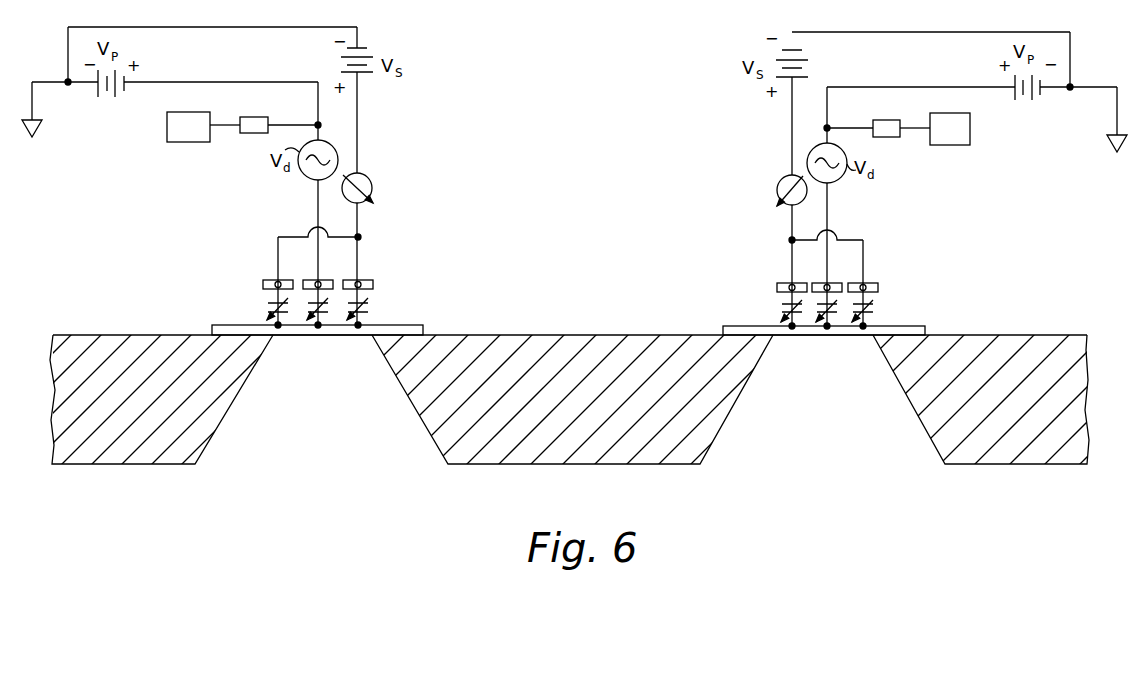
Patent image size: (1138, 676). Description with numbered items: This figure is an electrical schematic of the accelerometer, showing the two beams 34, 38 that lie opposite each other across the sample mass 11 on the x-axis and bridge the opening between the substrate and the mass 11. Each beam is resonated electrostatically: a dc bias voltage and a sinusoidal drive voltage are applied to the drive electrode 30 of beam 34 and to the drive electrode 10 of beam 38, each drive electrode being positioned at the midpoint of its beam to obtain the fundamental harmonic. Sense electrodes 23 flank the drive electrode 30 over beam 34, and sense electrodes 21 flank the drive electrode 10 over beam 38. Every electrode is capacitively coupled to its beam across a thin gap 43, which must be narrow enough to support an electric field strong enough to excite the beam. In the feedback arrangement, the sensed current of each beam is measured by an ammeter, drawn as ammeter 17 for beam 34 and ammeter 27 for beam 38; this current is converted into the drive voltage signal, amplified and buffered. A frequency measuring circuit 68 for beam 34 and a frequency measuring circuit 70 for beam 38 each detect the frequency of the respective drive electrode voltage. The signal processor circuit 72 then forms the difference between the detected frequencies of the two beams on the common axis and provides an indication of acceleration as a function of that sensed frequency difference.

The drive electrode 10 is at (326, 279).
The sample mass 11 is at (562, 411).
The ammeter 17 is at (779, 182).
The sense electrode 21 is at (272, 279).
The sense electrode 23 is at (783, 282).
The ammeter 27 is at (371, 177).
The drive electrode 30 is at (831, 282).
The beam 34 is at (833, 338).
The beam 38 is at (338, 338).
The gap 43 is at (258, 300).
The frequency measuring circuit 68 is at (878, 118).
The frequency measuring circuit 70 is at (262, 116).
The signal processor circuit 72 is at (568, 128).